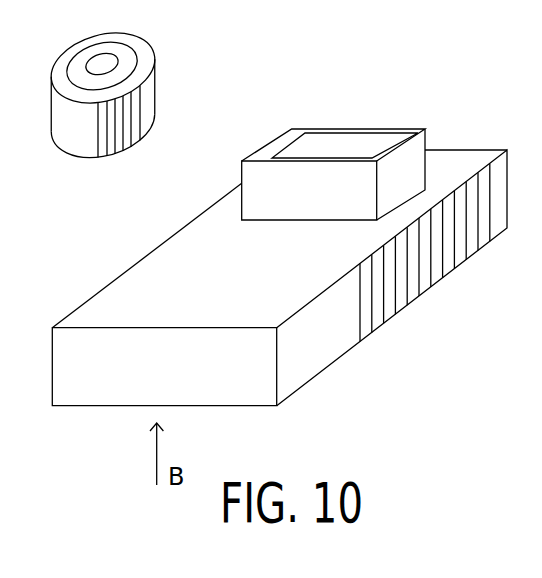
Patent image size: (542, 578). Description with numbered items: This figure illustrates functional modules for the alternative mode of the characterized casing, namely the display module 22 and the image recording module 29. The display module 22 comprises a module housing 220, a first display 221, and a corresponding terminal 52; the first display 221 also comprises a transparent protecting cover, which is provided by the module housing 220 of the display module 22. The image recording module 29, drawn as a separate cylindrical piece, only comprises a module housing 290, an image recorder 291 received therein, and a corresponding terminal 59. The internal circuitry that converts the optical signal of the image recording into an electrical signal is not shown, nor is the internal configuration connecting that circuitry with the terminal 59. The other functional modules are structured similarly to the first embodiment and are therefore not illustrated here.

The image recording module 29 is at (139, 115).
The module housing 290 is at (155, 82).
The image recorder 291 is at (136, 52).
The terminal 59 is at (137, 118).
The display module 22 is at (294, 242).
The terminal 52 is at (473, 233).
The module housing 220 is at (357, 204).
The first display 221 is at (327, 143).